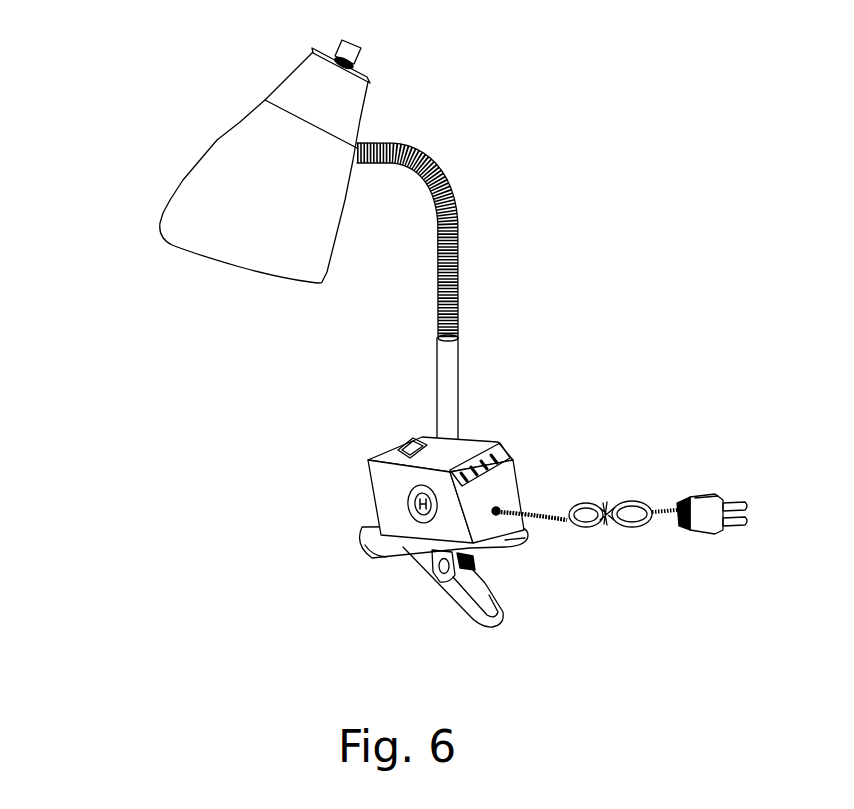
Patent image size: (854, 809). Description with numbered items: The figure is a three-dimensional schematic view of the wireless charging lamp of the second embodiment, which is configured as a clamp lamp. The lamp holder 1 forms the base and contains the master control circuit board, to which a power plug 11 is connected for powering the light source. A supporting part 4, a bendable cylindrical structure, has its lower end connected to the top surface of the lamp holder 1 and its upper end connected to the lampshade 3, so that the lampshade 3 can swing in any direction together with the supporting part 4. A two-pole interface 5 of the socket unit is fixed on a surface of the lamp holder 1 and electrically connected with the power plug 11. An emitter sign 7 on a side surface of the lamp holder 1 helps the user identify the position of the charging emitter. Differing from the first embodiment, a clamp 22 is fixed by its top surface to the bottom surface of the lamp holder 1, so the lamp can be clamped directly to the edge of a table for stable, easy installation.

The lamp holder 1 is at (490, 490).
The lampshade 3 is at (253, 160).
The supporting part 4 is at (458, 230).
The two-pole interface 5 is at (403, 450).
The emitter sign 7 is at (410, 505).
The power plug 11 is at (630, 498).
The clamp 22 is at (437, 570).